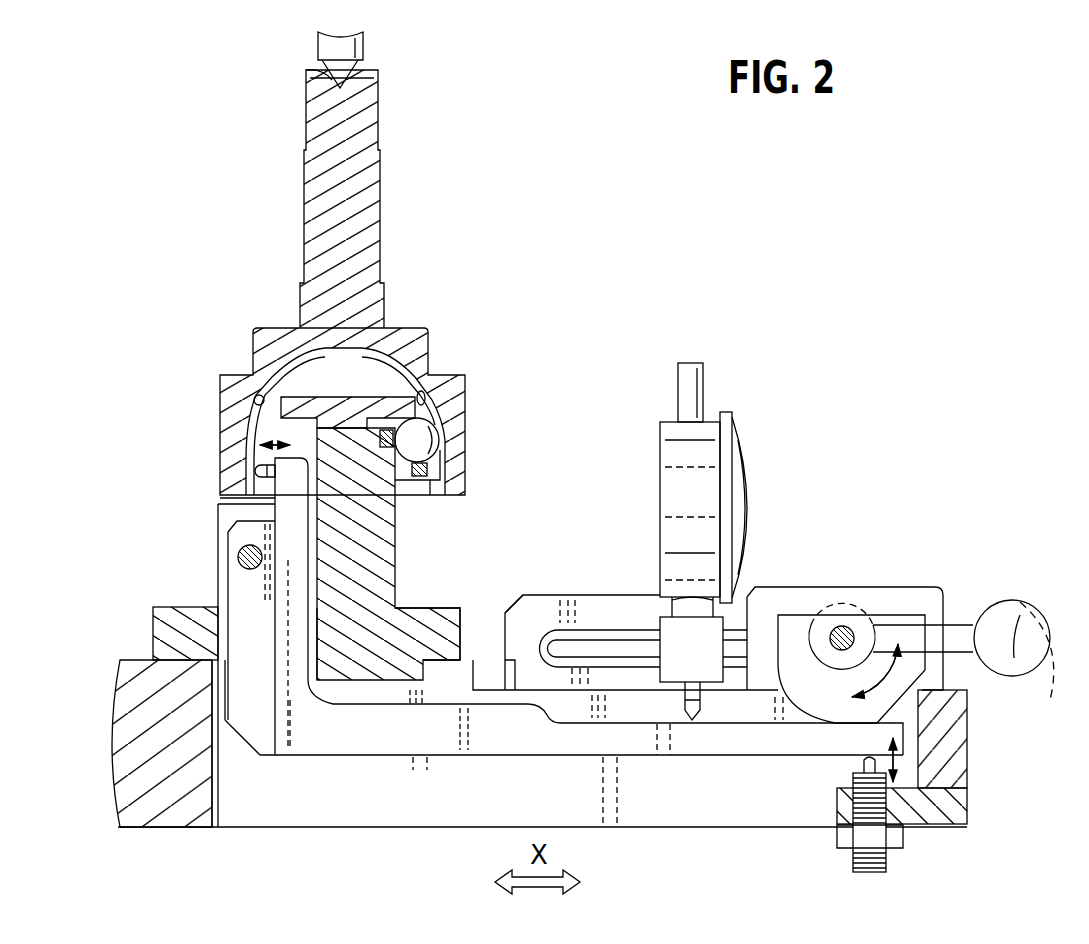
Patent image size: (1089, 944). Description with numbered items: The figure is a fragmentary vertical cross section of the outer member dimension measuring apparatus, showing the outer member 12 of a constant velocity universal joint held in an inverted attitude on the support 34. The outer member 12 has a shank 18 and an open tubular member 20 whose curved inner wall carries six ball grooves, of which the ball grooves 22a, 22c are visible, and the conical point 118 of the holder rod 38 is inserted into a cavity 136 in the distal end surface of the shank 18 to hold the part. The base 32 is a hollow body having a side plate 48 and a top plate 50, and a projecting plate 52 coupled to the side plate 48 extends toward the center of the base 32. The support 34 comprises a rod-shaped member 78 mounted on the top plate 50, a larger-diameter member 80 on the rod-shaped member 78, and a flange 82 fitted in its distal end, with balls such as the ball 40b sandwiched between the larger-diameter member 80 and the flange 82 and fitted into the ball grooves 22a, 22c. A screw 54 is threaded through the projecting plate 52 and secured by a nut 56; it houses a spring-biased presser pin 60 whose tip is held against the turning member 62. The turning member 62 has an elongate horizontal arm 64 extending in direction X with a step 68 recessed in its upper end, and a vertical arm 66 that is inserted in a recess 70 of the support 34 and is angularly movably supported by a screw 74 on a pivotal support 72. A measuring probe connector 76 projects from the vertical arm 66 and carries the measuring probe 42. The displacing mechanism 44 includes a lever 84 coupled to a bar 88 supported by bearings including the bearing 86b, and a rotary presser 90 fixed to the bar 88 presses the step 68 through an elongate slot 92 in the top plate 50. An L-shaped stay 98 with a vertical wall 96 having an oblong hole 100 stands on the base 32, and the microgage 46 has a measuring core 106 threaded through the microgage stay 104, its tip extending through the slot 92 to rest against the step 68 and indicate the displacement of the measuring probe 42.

The outer member 12 is at (380, 79).
The shank 18 is at (384, 178).
The tubular member 20 is at (222, 386).
The ball groove 22a is at (268, 400).
The ball groove 22c is at (431, 378).
The base 32 is at (158, 739).
The support 34 is at (466, 605).
The holder rod 38 is at (335, 58).
The ball 40b is at (430, 436).
The measuring probe 42 is at (256, 466).
The displacing mechanism 44 is at (937, 574).
The microgage 46 is at (676, 448).
The side plate 48 is at (945, 742).
The top plate 50 is at (136, 660).
The projecting plate 52 is at (945, 805).
The screw 54 is at (881, 862).
The nut 56 is at (838, 836).
The presser pin 60 is at (862, 768).
The turning member 62 is at (391, 760).
The horizontal arm 64 is at (541, 767).
The vertical arm 66 is at (255, 590).
The step 68 is at (633, 725).
The recess 70 is at (313, 580).
The pivotal support 72 is at (230, 512).
The screw 74 is at (246, 554).
The measuring probe connector 76 is at (298, 502).
The rod-shaped member 78 is at (375, 556).
The larger-diameter member 80 is at (430, 468).
The flange 82 is at (340, 402).
The lever 84 is at (1020, 626).
The bearing 86b is at (897, 597).
The bar 88 is at (841, 636).
The rotary presser 90 is at (800, 690).
The slot 92 is at (527, 693).
The vertical wall 96 is at (582, 585).
The L-shaped stay 98 is at (594, 610).
The oblong hole 100 is at (633, 643).
The microgage stay 104 is at (708, 676).
The measuring core 106 is at (690, 708).
The conical point 118 is at (299, 51).
The cavity 136 is at (312, 96).